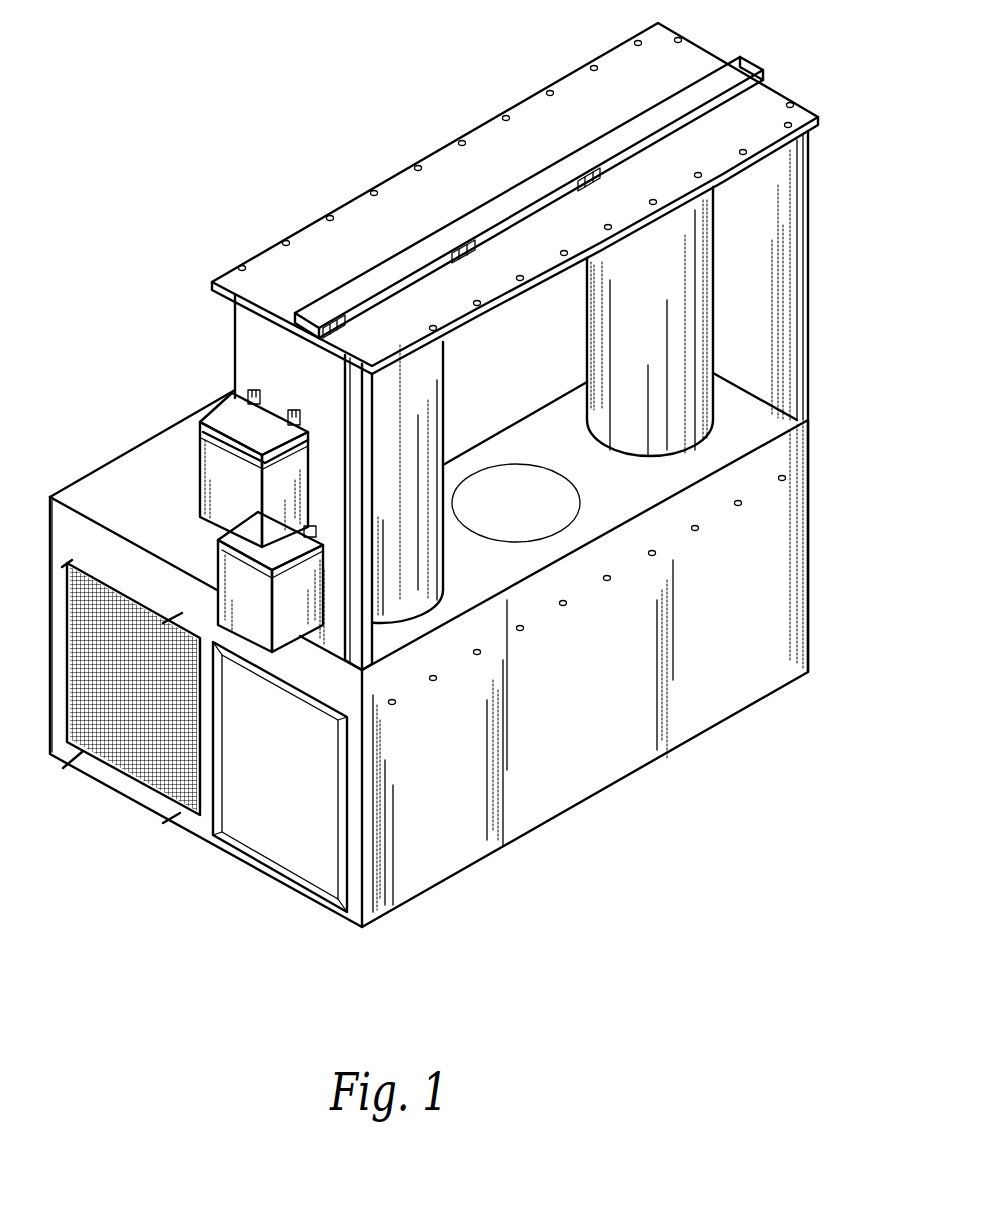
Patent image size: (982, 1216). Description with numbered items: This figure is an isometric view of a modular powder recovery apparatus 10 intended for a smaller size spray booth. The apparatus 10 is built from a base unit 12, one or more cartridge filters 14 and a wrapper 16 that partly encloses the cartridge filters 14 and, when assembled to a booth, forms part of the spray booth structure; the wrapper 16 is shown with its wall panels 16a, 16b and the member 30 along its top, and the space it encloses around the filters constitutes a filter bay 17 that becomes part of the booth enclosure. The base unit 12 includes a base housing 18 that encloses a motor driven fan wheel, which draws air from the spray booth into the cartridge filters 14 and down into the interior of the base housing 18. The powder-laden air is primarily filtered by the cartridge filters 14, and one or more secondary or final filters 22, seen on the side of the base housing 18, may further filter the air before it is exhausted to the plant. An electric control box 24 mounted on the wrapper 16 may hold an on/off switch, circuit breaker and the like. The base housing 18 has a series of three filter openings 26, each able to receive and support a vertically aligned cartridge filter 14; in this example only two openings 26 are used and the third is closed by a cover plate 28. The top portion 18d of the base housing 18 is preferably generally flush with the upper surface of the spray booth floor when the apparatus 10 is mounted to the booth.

The modular powder recovery apparatus 10 is at (287, 92).
The base unit 12 is at (335, 920).
The cartridge filters 14 is at (574, 364).
The wrapper 16 is at (822, 197).
The right end wall 16a is at (762, 279).
The left end wall 16b is at (245, 330).
The filter bay 17 is at (760, 366).
The base housing 18 is at (740, 637).
The top portion of the base housing 18d is at (763, 417).
The secondary or final filters 22 is at (132, 735).
The electric control box 24 is at (217, 470).
The filter openings 26 is at (436, 604).
The cover plate 28 is at (500, 512).
The top cover plate 30 is at (570, 83).